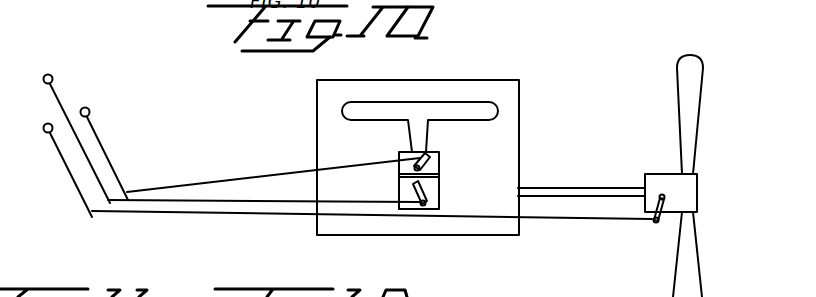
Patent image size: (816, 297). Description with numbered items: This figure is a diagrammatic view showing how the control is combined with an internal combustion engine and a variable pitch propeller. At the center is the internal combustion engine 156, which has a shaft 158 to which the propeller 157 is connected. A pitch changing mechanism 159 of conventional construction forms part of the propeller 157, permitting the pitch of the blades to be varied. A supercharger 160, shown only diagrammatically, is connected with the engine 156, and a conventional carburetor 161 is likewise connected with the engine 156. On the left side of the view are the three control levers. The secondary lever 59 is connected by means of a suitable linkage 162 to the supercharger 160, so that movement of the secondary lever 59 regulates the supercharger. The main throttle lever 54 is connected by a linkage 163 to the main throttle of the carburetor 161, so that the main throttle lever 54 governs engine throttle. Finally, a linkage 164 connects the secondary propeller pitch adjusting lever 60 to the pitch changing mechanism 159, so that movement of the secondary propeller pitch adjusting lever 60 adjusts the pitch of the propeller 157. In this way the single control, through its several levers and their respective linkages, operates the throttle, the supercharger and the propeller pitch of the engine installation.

The main throttle lever 54 is at (58, 97).
The secondary lever 59 is at (98, 137).
The secondary propeller pitch adjusting lever 60 is at (73, 185).
The internal combustion engine 156 is at (508, 130).
The propeller 157 is at (680, 131).
The shaft 158 is at (558, 187).
The pitch changing mechanism 159 is at (663, 182).
The supercharger 160 is at (438, 165).
The carburetor 161 is at (433, 187).
The linkage 162 is at (263, 173).
The linkage 163 is at (208, 200).
The linkage 164 is at (230, 217).